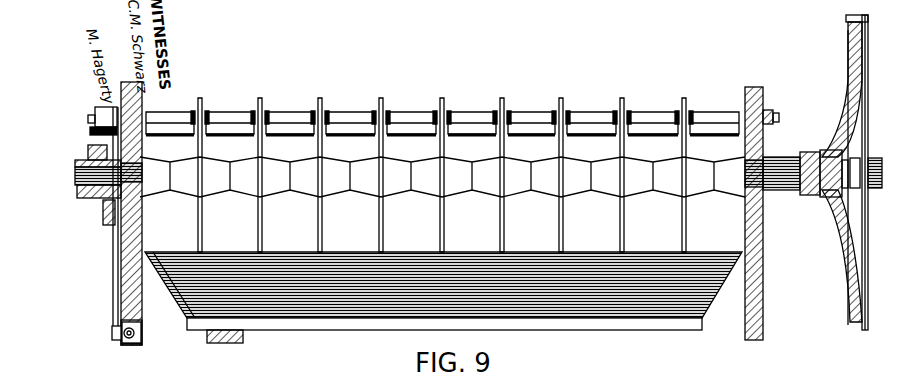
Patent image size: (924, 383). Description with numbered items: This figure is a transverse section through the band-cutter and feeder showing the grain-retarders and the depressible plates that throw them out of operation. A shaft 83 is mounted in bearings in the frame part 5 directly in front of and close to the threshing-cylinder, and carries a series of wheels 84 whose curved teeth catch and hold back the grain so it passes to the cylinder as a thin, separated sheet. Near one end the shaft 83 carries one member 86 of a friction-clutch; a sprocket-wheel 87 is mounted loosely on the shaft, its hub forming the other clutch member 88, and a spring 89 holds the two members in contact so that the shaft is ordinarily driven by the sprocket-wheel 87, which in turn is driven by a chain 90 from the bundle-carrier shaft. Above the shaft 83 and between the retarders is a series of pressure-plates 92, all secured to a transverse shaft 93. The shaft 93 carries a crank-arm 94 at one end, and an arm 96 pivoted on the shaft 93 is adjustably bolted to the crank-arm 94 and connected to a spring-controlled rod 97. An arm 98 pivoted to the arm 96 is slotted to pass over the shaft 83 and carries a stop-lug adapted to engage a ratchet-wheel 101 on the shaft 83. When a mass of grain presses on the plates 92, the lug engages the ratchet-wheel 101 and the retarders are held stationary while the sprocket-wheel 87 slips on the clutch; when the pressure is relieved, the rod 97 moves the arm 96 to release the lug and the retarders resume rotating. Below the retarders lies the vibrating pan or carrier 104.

The frame part 5 is at (143, 214).
The shaft 83 is at (766, 158).
The wheels 84 is at (203, 216).
The friction-clutch member 86 is at (797, 190).
The sprocket-wheel 87 is at (852, 321).
The clutch member 88 is at (819, 196).
The spring 89 is at (870, 162).
The chain 90 is at (868, 18).
The pressure-plates 92 is at (715, 112).
The transverse shaft 93 is at (384, 122).
The crank-arm 94 is at (143, 110).
The arm 96 is at (118, 292).
The spring-controlled rod 97 is at (126, 345).
The arm 98 is at (101, 226).
The ratchet-wheel 101 is at (99, 199).
The vibrating pan or carrier 104 is at (318, 320).